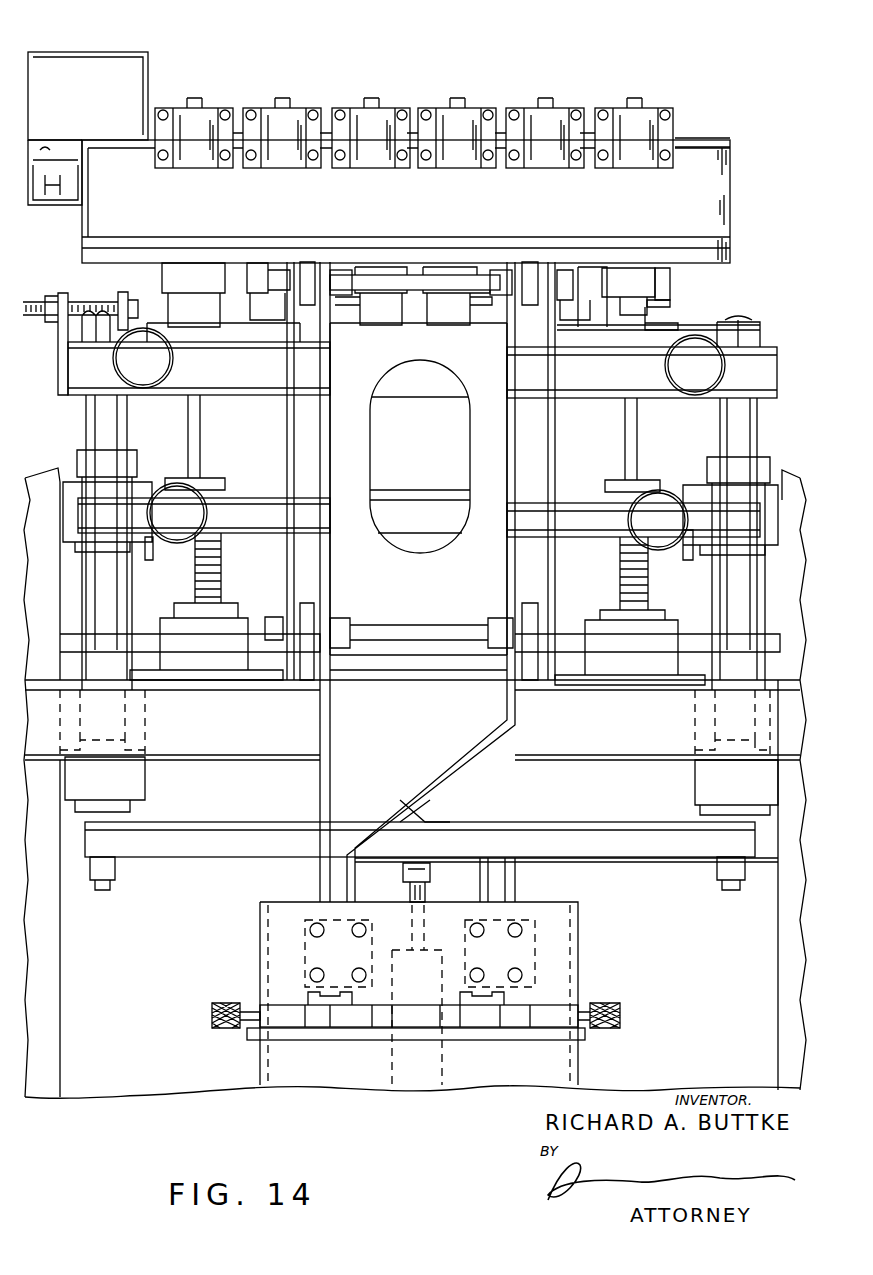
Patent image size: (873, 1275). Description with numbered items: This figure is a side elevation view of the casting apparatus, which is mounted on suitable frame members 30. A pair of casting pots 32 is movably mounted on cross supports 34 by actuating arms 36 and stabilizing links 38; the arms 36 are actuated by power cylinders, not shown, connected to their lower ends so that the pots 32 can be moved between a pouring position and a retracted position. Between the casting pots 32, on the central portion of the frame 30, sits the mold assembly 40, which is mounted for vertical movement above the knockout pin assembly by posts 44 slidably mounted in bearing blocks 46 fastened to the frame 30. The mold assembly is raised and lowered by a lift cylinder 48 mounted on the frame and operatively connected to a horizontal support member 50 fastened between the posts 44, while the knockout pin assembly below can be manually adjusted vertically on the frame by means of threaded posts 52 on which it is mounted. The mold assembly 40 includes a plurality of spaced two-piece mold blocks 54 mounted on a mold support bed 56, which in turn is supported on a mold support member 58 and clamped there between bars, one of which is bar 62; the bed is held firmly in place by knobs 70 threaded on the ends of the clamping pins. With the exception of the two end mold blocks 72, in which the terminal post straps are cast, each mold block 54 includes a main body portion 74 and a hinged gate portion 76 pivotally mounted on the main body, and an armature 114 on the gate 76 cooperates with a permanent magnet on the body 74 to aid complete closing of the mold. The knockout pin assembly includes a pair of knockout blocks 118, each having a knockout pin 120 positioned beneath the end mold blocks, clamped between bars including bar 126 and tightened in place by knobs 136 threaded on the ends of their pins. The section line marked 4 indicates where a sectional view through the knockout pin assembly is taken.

The section line 4 is at (105, 425).
The frame members 30 is at (45, 962).
The casting pots 32 is at (715, 190).
The cross supports 34 is at (308, 618).
The actuating arms 36 is at (510, 705).
The stabilizing links 38 is at (555, 345).
The mold assembly 40 is at (719, 284).
The posts 44 is at (112, 595).
The bearing blocks 46 is at (140, 488).
The lift cylinder 48 is at (420, 1018).
The horizontal support member 50 is at (202, 842).
The threaded posts 52 is at (218, 588).
The mold blocks 54 is at (260, 282).
The mold support bed 56 is at (568, 330).
The mold support member 58 is at (760, 355).
The bar 62 is at (697, 365).
The knobs 70 is at (165, 362).
The end mold blocks 72 is at (195, 282).
The main body portion 74 is at (625, 290).
The hinged gate portion 76 is at (672, 278).
The armature 114 is at (670, 310).
The knockout blocks 118 is at (218, 478).
The knockout pin 120 is at (196, 432).
The bar 126 is at (265, 490).
The knobs 136 is at (150, 514).